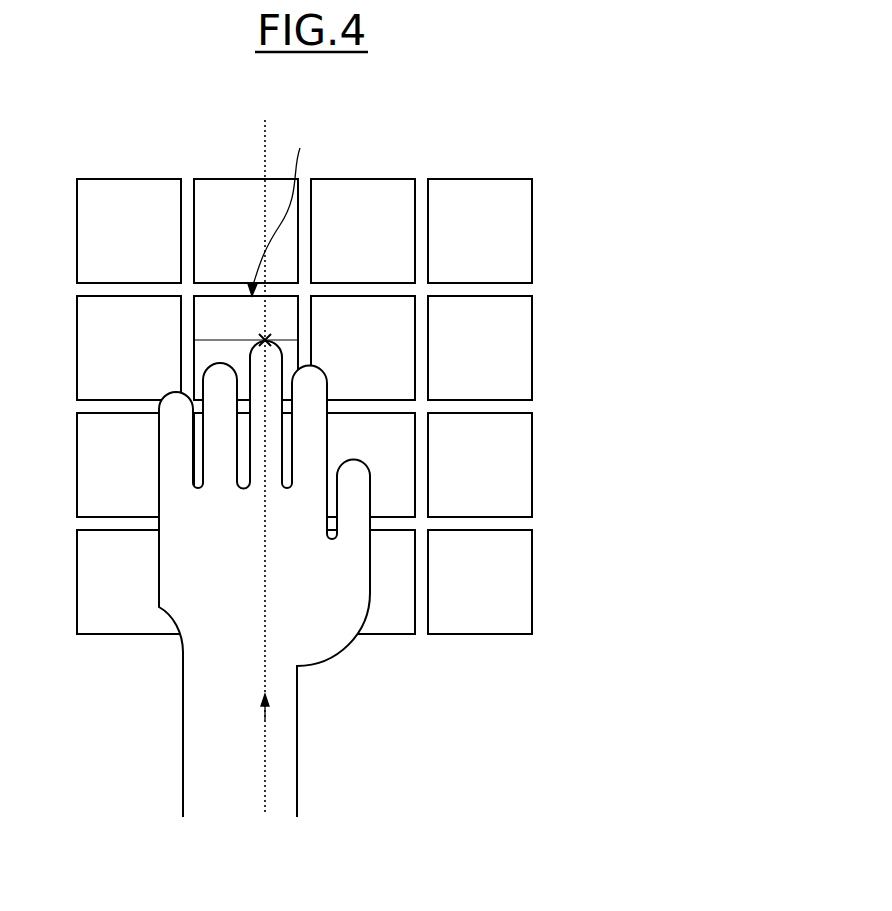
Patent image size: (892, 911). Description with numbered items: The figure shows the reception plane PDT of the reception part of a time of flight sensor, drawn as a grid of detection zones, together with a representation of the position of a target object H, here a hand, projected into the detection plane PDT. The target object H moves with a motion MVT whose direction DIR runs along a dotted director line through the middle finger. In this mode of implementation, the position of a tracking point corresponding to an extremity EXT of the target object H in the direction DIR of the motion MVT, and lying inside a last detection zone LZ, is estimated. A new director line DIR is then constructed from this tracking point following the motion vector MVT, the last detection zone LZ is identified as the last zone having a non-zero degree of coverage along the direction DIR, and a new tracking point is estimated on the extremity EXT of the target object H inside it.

The reception plane PDT is at (528, 161).
The target object H is at (336, 651).
The direction of the motion DIR is at (262, 786).
The motion MVT is at (262, 713).
The extremity EXT is at (222, 338).
The last detection zone LZ is at (280, 210).